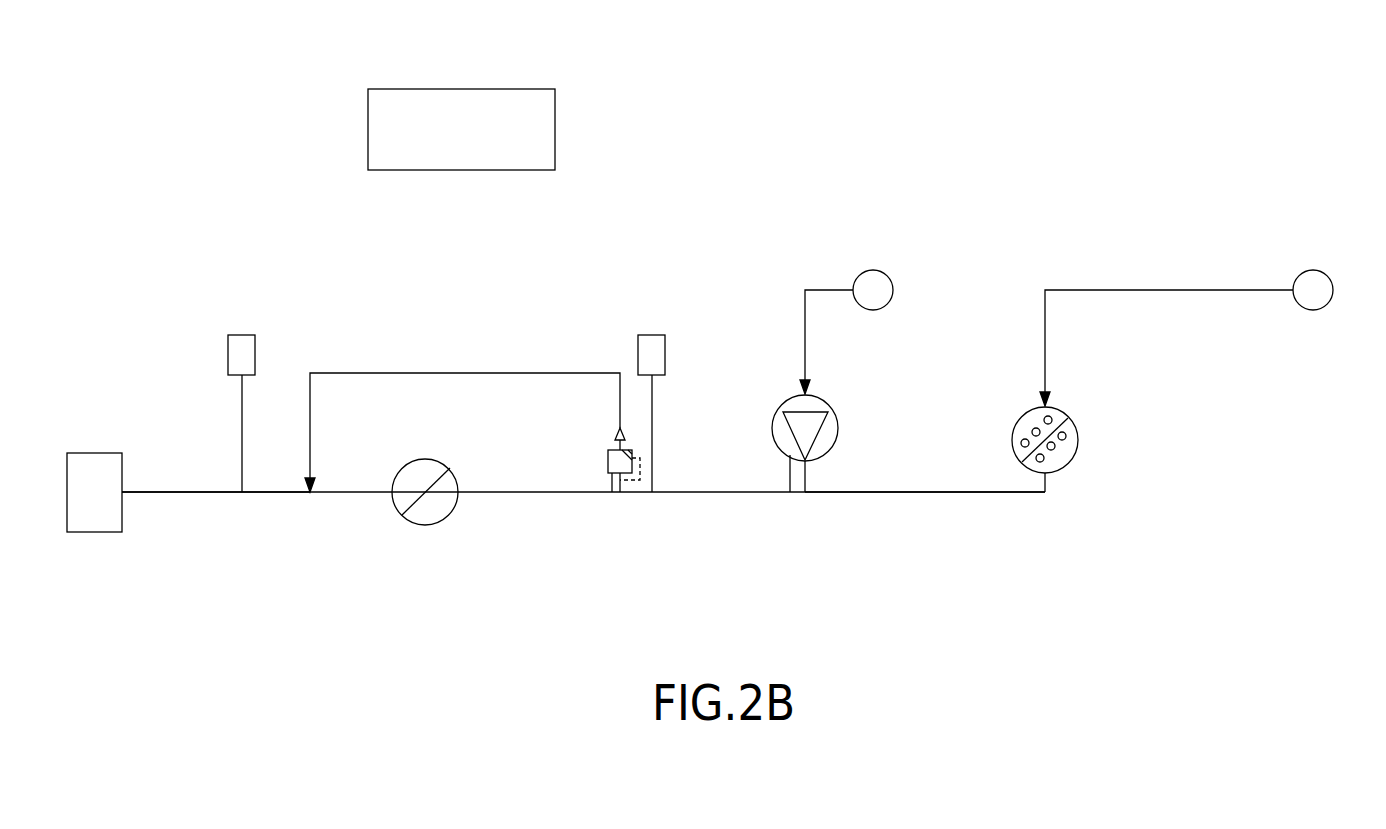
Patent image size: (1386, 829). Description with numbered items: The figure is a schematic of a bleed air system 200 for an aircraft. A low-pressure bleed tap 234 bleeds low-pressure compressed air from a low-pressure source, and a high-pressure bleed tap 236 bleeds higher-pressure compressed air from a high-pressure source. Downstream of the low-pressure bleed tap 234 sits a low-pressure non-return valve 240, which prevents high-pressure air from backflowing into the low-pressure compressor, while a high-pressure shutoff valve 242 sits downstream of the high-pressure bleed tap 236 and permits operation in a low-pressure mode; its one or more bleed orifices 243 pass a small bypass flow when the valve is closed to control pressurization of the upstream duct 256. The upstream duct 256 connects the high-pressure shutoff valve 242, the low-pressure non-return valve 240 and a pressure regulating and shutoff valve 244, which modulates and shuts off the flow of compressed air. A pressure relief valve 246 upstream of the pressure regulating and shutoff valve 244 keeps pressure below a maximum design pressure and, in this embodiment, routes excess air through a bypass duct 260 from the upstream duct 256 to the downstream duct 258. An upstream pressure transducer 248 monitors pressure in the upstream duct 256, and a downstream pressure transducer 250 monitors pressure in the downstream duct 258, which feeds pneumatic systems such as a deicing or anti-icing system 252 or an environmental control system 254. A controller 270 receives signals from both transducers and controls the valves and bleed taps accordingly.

The bleed air system 200 is at (218, 152).
The controller 270 is at (555, 130).
The downstream pressure transducer 250 is at (255, 351).
The upstream pressure transducer 248 is at (665, 352).
The bypass duct 260 is at (421, 373).
The pressure regulating and shutoff valve 244 is at (422, 459).
The pressure relief valve 246 is at (612, 492).
The low-pressure bleed tap 234 is at (893, 288).
The high-pressure bleed tap 236 is at (1313, 310).
The low-pressure non-return valve 240 is at (790, 492).
The high-pressure shutoff valve 242 is at (1062, 454).
The bleed orifices 243 is at (1040, 460).
The deicing or anti-icing system 252 is at (77, 525).
The environmental control system 254 is at (115, 525).
The upstream duct 256 is at (865, 492).
The downstream duct 258 is at (185, 492).